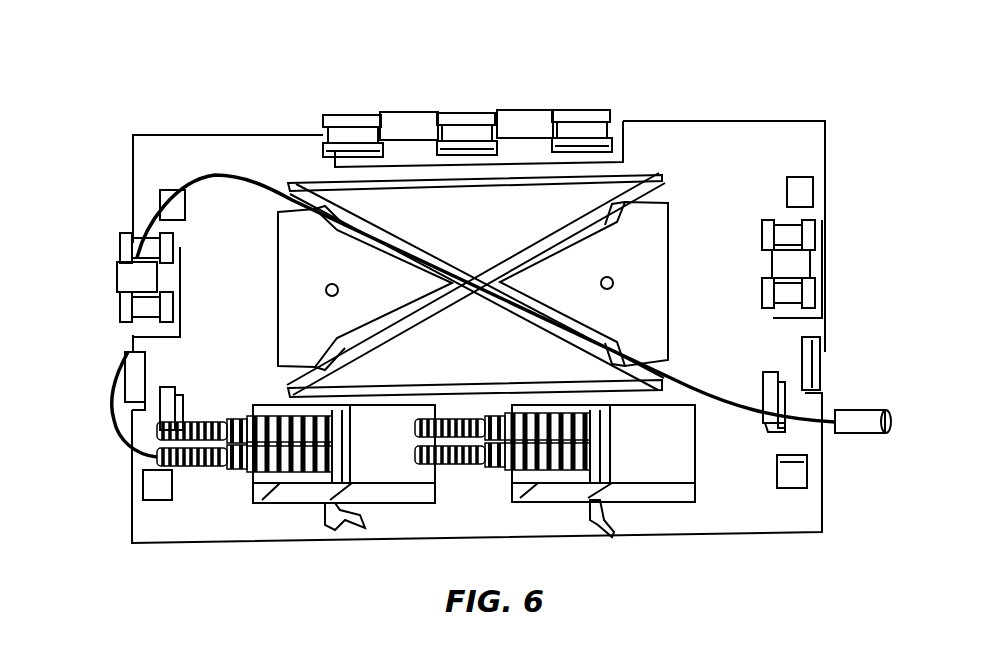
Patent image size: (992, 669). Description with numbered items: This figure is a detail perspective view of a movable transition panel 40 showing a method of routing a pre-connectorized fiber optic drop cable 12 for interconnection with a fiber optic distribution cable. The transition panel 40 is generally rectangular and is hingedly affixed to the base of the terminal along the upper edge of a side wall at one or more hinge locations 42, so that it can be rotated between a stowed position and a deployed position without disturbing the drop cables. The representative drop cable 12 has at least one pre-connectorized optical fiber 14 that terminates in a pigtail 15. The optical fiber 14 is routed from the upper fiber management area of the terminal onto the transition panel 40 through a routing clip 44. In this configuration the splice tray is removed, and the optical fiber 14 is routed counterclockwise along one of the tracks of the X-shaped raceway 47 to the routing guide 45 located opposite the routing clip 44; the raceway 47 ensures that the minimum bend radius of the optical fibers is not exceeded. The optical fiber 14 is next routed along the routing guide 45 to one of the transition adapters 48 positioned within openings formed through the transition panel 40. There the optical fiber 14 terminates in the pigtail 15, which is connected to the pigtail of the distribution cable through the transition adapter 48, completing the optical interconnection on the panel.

The drop cable 12 is at (862, 425).
The optical fiber 14 is at (235, 175).
The pigtail 15 is at (205, 463).
The transition panel 40 is at (866, 189).
The hinge location 42 is at (340, 527).
The routing clip 44 is at (773, 430).
The routing guide 45 is at (523, 120).
The X-shaped raceway 47 is at (552, 197).
The transition adapter 48 is at (378, 477).